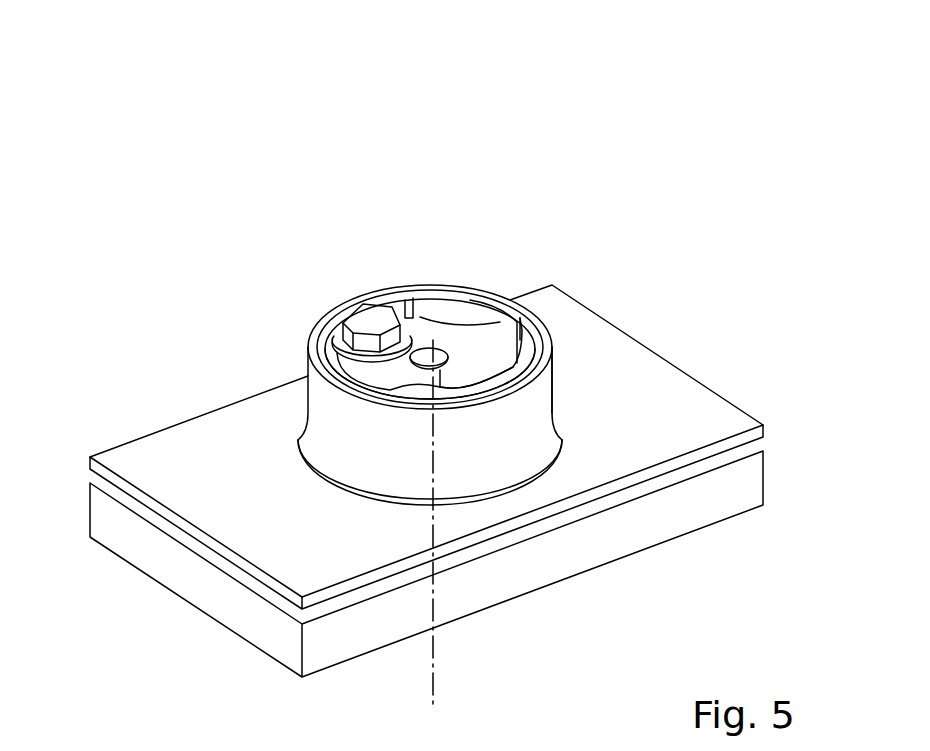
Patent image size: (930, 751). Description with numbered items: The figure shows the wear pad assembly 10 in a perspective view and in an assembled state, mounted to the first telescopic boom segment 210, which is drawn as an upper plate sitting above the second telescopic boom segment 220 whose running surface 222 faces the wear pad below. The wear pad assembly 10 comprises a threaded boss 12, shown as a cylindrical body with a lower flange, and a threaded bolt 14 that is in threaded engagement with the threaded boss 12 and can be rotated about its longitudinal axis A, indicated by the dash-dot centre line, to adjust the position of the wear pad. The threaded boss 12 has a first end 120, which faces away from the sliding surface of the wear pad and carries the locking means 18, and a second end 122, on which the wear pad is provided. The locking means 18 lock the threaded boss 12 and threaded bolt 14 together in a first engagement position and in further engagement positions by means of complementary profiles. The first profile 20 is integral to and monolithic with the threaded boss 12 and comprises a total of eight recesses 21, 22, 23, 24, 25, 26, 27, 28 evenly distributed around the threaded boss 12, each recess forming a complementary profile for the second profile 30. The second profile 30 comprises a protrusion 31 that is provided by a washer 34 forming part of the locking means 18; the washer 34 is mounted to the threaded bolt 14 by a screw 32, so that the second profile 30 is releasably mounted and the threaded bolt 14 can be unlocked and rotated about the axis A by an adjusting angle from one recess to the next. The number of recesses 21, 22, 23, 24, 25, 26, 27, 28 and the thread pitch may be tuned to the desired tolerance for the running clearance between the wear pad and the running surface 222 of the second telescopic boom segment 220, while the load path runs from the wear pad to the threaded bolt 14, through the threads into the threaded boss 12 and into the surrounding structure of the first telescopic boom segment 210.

The wear pad assembly 10 is at (125, 296).
The threaded boss 12 is at (405, 474).
The threaded bolt 14 is at (423, 362).
The locking means 18 is at (426, 137).
The first profile 20 is at (545, 314).
The recess 21 is at (345, 384).
The recess 22 is at (327, 342).
The recess 23 is at (388, 303).
The recess 24 is at (432, 300).
The recess 25 is at (510, 302).
The recess 26 is at (553, 346).
The recess 27 is at (512, 380).
The recess 28 is at (438, 383).
The second profile 30 is at (294, 283).
The protrusion 31 is at (355, 283).
The screw 32 is at (368, 315).
The washer 34 is at (411, 300).
The first end 120 is at (360, 413).
The second end 122 is at (383, 479).
The first telescopic boom segment 210 is at (705, 412).
The second telescopic boom segment 220 is at (445, 564).
The running surface 222 is at (737, 493).
The longitudinal axis A is at (433, 687).